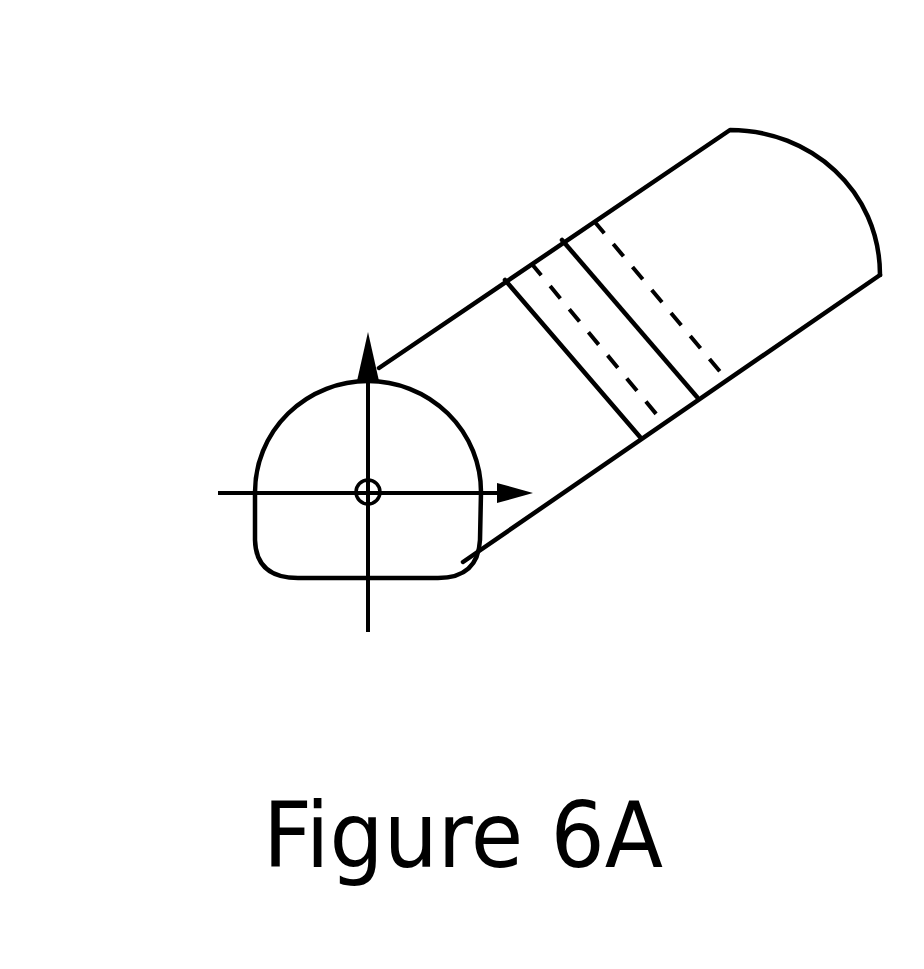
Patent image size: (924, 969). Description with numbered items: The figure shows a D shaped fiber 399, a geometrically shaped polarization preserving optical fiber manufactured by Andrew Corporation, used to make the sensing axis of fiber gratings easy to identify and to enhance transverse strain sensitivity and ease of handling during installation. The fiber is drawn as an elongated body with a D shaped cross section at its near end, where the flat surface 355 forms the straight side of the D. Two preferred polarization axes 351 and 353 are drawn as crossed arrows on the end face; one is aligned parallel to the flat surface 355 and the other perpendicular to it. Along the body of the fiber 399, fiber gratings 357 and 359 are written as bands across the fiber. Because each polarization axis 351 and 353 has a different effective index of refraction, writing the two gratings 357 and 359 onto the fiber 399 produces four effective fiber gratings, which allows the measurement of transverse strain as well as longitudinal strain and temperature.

The polarization axis 351 is at (305, 505).
The polarization axis 353 is at (381, 438).
The flat surface 355 is at (420, 590).
The fiber grating 357 is at (497, 263).
The fiber grating 359 is at (742, 393).
The D shaped fiber 399 is at (743, 128).